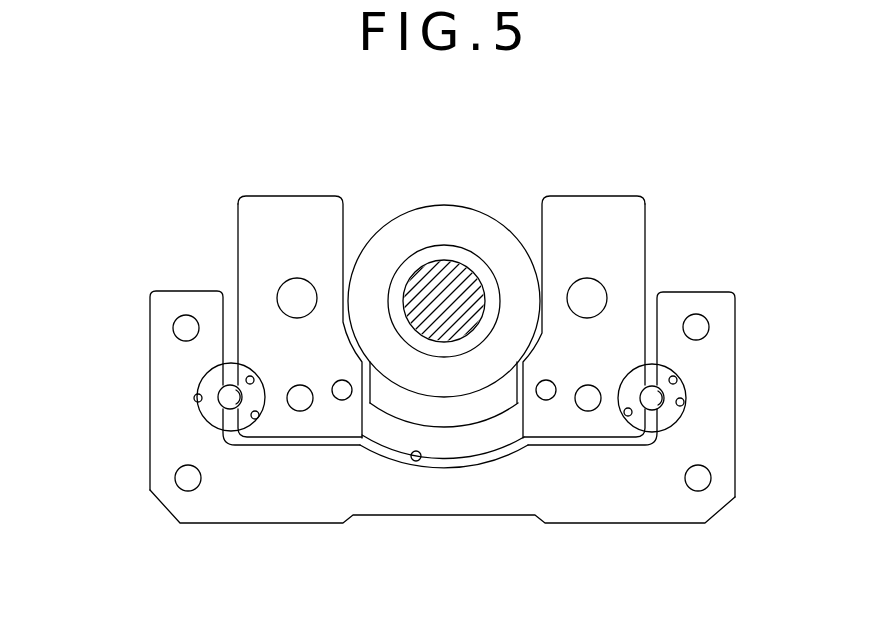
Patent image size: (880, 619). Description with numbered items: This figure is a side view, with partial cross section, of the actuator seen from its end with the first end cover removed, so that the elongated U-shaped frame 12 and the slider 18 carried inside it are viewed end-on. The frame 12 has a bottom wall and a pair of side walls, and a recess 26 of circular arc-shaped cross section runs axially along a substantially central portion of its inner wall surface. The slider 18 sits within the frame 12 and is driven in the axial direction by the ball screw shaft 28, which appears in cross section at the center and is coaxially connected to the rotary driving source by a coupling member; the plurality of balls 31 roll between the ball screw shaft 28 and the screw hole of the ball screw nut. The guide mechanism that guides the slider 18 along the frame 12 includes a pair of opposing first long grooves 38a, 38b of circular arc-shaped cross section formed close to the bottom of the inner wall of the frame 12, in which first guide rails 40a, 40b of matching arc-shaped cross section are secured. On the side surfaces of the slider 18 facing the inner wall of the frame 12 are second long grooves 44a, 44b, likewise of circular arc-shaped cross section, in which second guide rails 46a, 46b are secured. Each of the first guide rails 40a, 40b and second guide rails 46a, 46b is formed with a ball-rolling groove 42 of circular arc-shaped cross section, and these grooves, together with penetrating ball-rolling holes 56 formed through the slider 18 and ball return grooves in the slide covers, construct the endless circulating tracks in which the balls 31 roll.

The frame 12 is at (470, 515).
The slider 18 is at (605, 212).
The recess 26 is at (416, 462).
The ball screw shaft 28 is at (447, 268).
The balls 31 is at (654, 420).
The first long groove 38a is at (198, 398).
The first long groove 38b is at (688, 413).
The first guide rail 40a is at (203, 382).
The first guide rail 40b is at (674, 382).
The ball-rolling groove 42 is at (222, 405).
The second long groove 44a is at (258, 415).
The second long groove 44b is at (626, 412).
The second guide rail 46a is at (262, 368).
The second guide rail 46b is at (626, 370).
The ball-rolling holes 56 is at (302, 406).